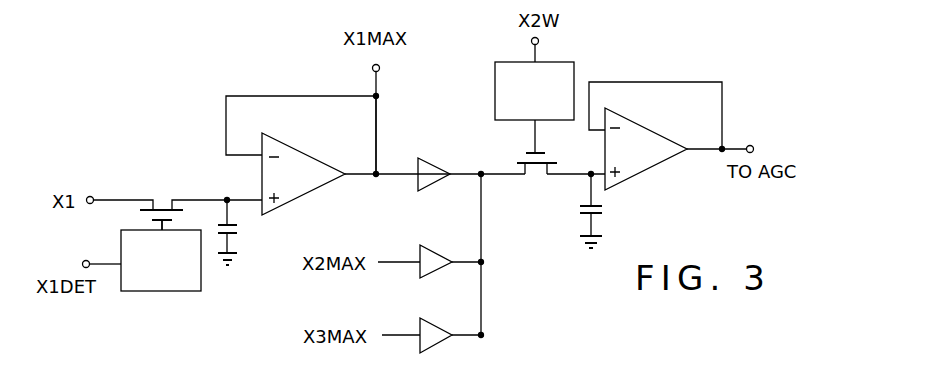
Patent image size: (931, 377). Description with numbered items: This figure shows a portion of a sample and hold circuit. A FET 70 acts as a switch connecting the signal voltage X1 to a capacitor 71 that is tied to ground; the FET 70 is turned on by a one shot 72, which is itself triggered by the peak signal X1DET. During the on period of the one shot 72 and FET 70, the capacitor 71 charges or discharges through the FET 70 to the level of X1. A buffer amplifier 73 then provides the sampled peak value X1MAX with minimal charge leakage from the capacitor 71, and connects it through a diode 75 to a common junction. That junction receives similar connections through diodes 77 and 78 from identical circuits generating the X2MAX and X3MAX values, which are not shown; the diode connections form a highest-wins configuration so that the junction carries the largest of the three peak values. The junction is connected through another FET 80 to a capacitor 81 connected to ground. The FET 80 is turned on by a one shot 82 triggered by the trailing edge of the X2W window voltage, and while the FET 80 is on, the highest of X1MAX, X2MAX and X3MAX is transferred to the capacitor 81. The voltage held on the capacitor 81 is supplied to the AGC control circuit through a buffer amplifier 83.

The FET 70 is at (165, 207).
The capacitor 71 is at (230, 236).
The one shot 72 is at (187, 288).
The buffer amplifier 73 is at (295, 153).
The diode 75 is at (425, 158).
The diode 77 is at (425, 250).
The diode 78 is at (425, 325).
The FET 80 is at (535, 177).
The capacitor 81 is at (594, 216).
The one shot 82 is at (543, 68).
The buffer amplifier 83 is at (637, 163).